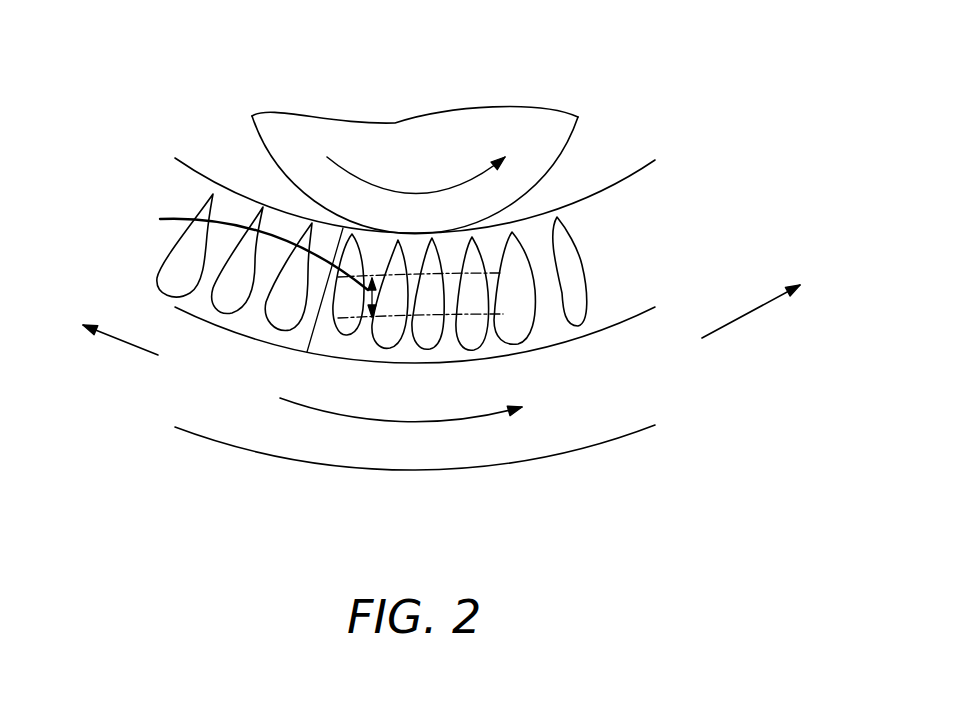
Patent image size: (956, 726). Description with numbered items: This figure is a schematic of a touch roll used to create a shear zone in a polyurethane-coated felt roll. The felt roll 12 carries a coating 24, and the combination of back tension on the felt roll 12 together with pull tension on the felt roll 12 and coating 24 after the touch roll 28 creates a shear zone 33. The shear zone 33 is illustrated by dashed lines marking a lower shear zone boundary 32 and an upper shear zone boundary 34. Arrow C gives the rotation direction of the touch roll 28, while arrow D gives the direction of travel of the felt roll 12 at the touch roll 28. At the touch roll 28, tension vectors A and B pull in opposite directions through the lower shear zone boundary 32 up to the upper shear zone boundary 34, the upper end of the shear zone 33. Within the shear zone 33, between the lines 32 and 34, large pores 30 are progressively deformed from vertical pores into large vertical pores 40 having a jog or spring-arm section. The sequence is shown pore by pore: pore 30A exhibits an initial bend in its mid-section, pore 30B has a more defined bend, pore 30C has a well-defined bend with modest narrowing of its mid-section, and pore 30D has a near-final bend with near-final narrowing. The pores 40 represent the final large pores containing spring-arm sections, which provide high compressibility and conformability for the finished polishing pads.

The felt roll 12 is at (250, 438).
The coating 24 is at (233, 203).
The touch roll 28 is at (546, 117).
The large pores 30 is at (218, 300).
The pore with initial bend 30A is at (345, 333).
The pore with more defined bend 30B is at (392, 338).
The pore with well-defined bend 30C is at (430, 337).
The pore with near-final bend 30D is at (477, 335).
The lower shear zone boundary 32 is at (493, 315).
The shear zone 33 is at (160, 219).
The upper shear zone boundary 34 is at (455, 273).
The large vertical pores 40 is at (520, 323).
The tension vector A is at (120, 345).
The tension vector B is at (750, 312).
The rotation direction arrow C is at (417, 192).
The felt roll direction arrow D is at (385, 420).